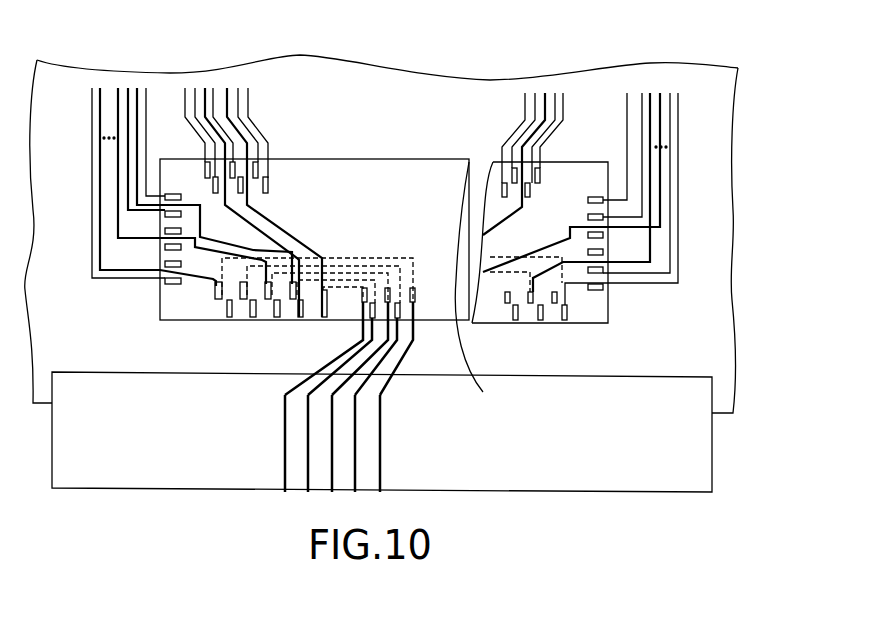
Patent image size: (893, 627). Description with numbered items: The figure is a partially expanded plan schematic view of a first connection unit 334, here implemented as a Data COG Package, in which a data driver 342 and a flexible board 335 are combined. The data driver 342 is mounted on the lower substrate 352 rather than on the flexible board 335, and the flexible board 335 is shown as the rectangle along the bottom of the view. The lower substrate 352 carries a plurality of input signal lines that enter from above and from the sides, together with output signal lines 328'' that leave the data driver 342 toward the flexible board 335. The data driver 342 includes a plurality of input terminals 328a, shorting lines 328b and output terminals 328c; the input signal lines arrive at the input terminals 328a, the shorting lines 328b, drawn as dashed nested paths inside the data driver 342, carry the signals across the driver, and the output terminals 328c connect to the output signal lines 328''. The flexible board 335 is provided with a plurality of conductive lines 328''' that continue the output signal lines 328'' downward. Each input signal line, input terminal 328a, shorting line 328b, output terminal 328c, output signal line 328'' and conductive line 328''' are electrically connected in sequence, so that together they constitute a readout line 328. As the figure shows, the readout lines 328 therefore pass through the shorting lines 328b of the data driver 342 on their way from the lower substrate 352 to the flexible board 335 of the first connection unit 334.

The lower substrate 352 is at (56, 100).
The readout line 328 is at (207, 163).
The input terminal 328a is at (216, 284).
The shorting line 328b is at (352, 257).
The output signal line 328'' is at (373, 363).
The conductive line 328''' is at (374, 443).
The output terminal 328c is at (484, 288).
The data driver 342 is at (593, 313).
The flexible board 335 is at (663, 403).
The first connection unit 334 is at (652, 205).